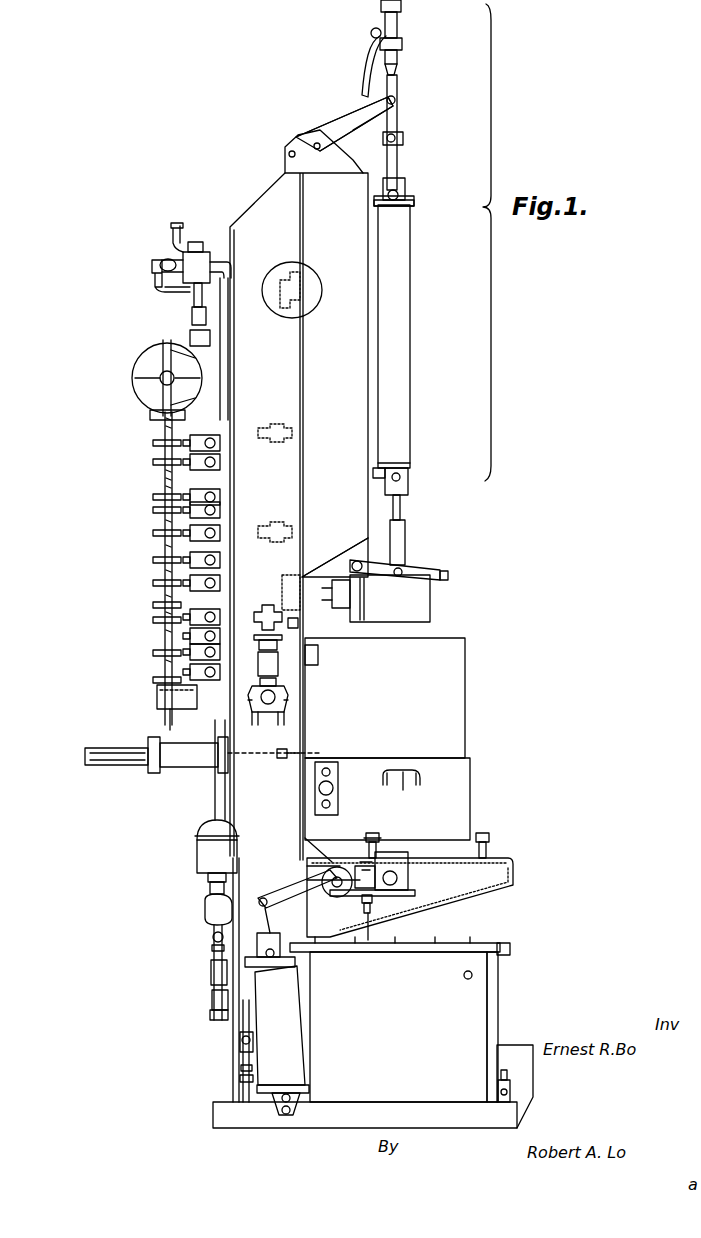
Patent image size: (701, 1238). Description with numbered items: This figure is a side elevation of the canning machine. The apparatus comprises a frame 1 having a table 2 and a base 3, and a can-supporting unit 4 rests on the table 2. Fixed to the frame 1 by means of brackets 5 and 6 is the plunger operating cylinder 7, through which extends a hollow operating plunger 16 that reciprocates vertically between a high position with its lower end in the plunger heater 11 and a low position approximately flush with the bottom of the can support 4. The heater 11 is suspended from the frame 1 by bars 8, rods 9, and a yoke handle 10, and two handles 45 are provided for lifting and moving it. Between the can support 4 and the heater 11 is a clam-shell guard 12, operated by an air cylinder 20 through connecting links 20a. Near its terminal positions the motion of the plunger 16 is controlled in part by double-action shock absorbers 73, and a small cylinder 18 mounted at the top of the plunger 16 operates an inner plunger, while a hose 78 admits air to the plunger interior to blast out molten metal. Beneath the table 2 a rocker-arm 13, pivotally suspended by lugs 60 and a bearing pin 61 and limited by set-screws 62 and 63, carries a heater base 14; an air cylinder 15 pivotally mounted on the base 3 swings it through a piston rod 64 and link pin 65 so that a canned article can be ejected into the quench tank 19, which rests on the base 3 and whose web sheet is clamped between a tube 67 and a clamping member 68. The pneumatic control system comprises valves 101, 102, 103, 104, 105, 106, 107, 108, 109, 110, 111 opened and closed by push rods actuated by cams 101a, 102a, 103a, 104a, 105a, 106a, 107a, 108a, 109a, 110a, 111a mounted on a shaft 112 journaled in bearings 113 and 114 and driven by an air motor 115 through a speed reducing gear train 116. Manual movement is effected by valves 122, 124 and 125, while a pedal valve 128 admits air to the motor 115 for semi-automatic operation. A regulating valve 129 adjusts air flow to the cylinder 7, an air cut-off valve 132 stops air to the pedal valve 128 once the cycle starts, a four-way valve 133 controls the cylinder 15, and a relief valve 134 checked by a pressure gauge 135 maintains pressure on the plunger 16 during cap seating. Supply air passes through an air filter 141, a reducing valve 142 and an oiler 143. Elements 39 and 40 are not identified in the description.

The frame 1 is at (305, 697).
The table 2 is at (514, 862).
The base 3 is at (210, 1102).
The can-supporting unit 4 is at (471, 795).
The bracket 5 is at (402, 200).
The bracket 6 is at (410, 465).
The plunger operating cylinder 7 is at (411, 355).
The bars 8 is at (352, 566).
The rods 9 is at (375, 575).
The yoke handle 10 is at (448, 573).
The plunger heater 11 is at (431, 610).
The clam-shell guard 12 is at (466, 700).
The rocker-arm 13 is at (290, 868).
The heater base 14 is at (409, 880).
The air cylinder 15 is at (305, 1015).
The hollow operating plunger 16 is at (397, 78).
The small cylinder 18 is at (401, 25).
The quench tank 19 is at (490, 1013).
The air cylinder 20 is at (210, 764).
The connecting links 20a is at (282, 760).
The bolt 39 is at (380, 840).
The bolt 40 is at (490, 838).
The handles 45 is at (403, 790).
The lugs 60 is at (318, 855).
The bearing pin 61 is at (340, 870).
The set-screw 62 is at (362, 903).
The set-screw 63 is at (370, 942).
The piston rod 64 is at (272, 937).
The link pin 65 is at (264, 898).
The tube 67 is at (500, 942).
The clamping member 68 is at (453, 940).
The double-action shock absorbers 73 is at (343, 112).
The hose 78 is at (368, 68).
The valve 101 is at (215, 437).
The valve 102 is at (221, 462).
The valve 103 is at (201, 487).
The valve 104 is at (225, 505).
The valve 105 is at (218, 532).
The valve 106 is at (221, 562).
The valve 107 is at (221, 585).
The valve 108 is at (201, 609).
The valve 109 is at (165, 638).
The valve 110 is at (165, 670).
The valve 111 is at (220, 676).
The actuating cam 101a is at (160, 443).
The actuating cam 102a is at (160, 462).
The actuating cam 103a is at (160, 497).
The actuating cam 104a is at (160, 510).
The actuating cam 105a is at (160, 533).
The actuating cam 106a is at (160, 560).
The actuating cam 107a is at (160, 583).
The actuating cam 108a is at (160, 605).
The actuating cam 109a is at (160, 620).
The actuating cam 110a is at (160, 653).
The actuating cam 111a is at (160, 682).
The shaft 112 is at (168, 720).
The bearing 113 is at (189, 708).
The bearing 114 is at (160, 413).
The air motor 115 is at (185, 256).
The speed reducing gear train 116 is at (150, 352).
The valve 122 is at (293, 432).
The valve 124 is at (293, 530).
The valve 125 is at (299, 624).
The pedal valve 128 is at (500, 1080).
The regulating valve 129 is at (312, 274).
The air cut-off valve 132 is at (240, 1040).
The four-way valve 133 is at (290, 715).
The relief valve 134 is at (319, 655).
The pressure gauge 135 is at (274, 583).
The air filter 141 is at (200, 834).
The reducing valve 142 is at (205, 912).
The oiler 143 is at (210, 892).